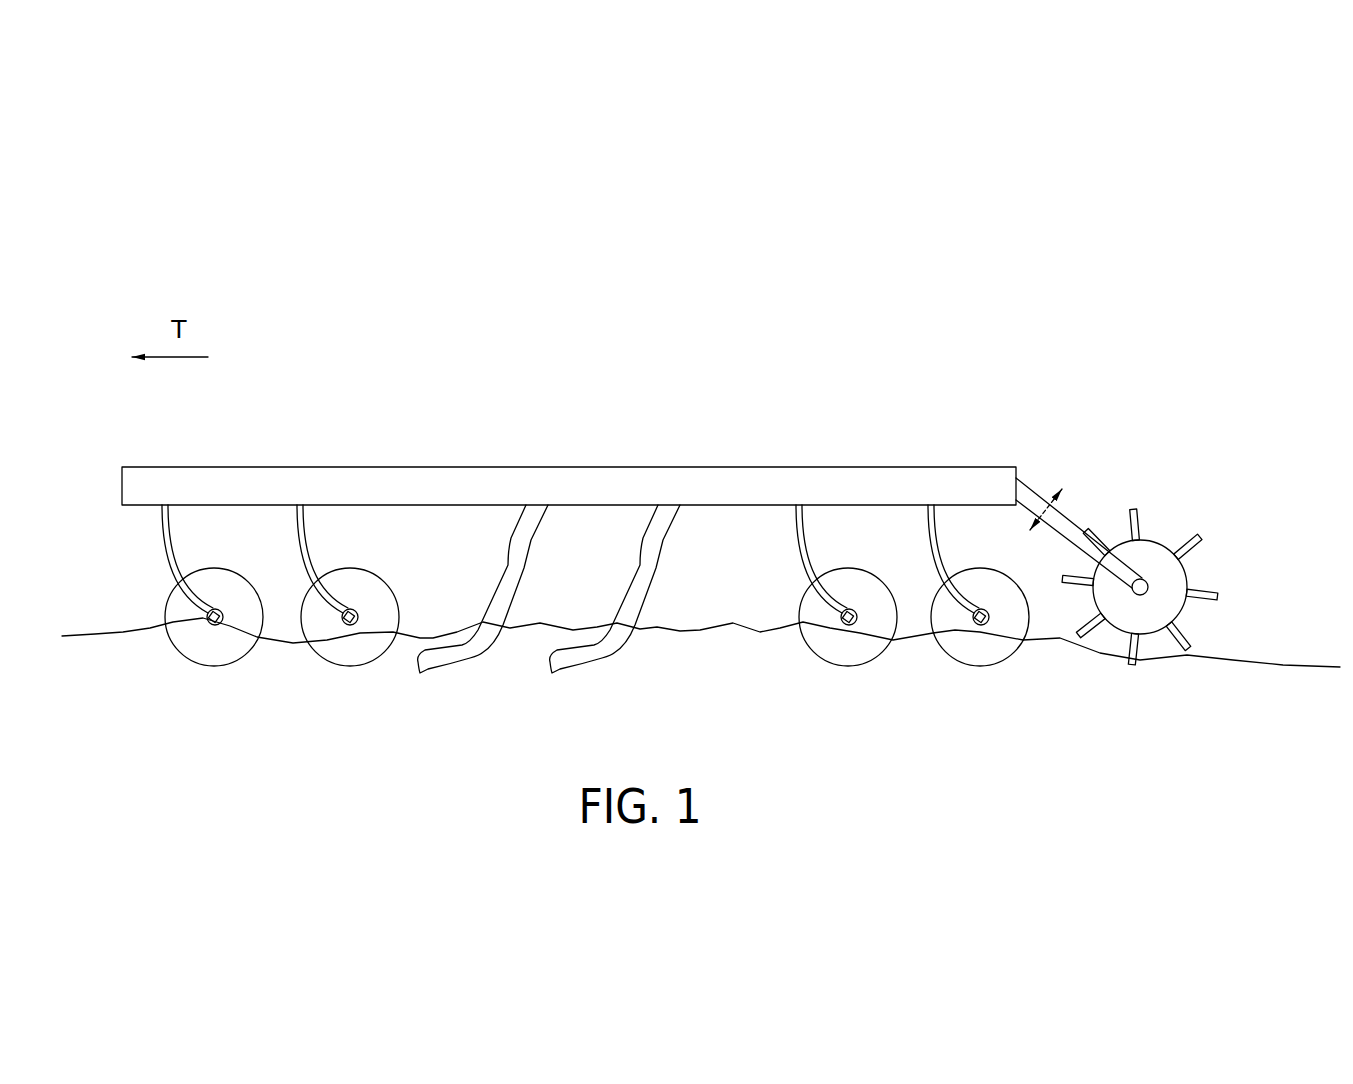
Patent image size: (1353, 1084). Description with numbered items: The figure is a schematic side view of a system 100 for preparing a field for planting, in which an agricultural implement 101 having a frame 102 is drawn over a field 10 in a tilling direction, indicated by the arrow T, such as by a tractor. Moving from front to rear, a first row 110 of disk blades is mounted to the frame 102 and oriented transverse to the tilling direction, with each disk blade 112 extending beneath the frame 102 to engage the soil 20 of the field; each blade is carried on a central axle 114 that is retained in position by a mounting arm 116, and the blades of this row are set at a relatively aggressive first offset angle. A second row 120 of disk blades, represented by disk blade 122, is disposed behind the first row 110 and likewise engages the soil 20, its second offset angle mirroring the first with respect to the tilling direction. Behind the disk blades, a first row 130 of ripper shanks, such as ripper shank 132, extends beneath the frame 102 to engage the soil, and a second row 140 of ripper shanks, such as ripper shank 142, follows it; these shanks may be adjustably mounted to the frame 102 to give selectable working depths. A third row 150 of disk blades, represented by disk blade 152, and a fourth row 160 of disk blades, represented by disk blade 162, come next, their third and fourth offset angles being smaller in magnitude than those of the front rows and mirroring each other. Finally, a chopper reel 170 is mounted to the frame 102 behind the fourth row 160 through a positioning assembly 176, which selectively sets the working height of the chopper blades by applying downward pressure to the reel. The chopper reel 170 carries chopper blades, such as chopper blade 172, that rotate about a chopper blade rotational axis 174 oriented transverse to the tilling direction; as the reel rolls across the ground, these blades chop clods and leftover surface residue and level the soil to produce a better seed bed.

The field 10 is at (1280, 650).
The soil 20 is at (724, 674).
The system 100 is at (1022, 235).
The agricultural implement 101 is at (893, 332).
The frame 102 is at (735, 481).
The first row of disk blades 110 is at (201, 530).
The disk blade 112 is at (218, 653).
The central axle 114 is at (222, 612).
The mounting arm 116 is at (172, 557).
The second row of disk blades 120 is at (345, 530).
The disk blade 122 is at (352, 653).
The first row of ripper shanks 130 is at (472, 540).
The ripper shank 132 is at (468, 652).
The second row of ripper shanks 140 is at (610, 540).
The ripper shank 142 is at (608, 652).
The third row of disk blades 150 is at (848, 530).
The disk blade 152 is at (857, 652).
The fourth row of disk blades 160 is at (973, 530).
The disk blade 162 is at (983, 652).
The chopper reel 170 is at (1200, 568).
The chopper blade 172 is at (1187, 634).
The chopper blade rotational axis 174 is at (1135, 591).
The positioning assembly 176 is at (1083, 492).